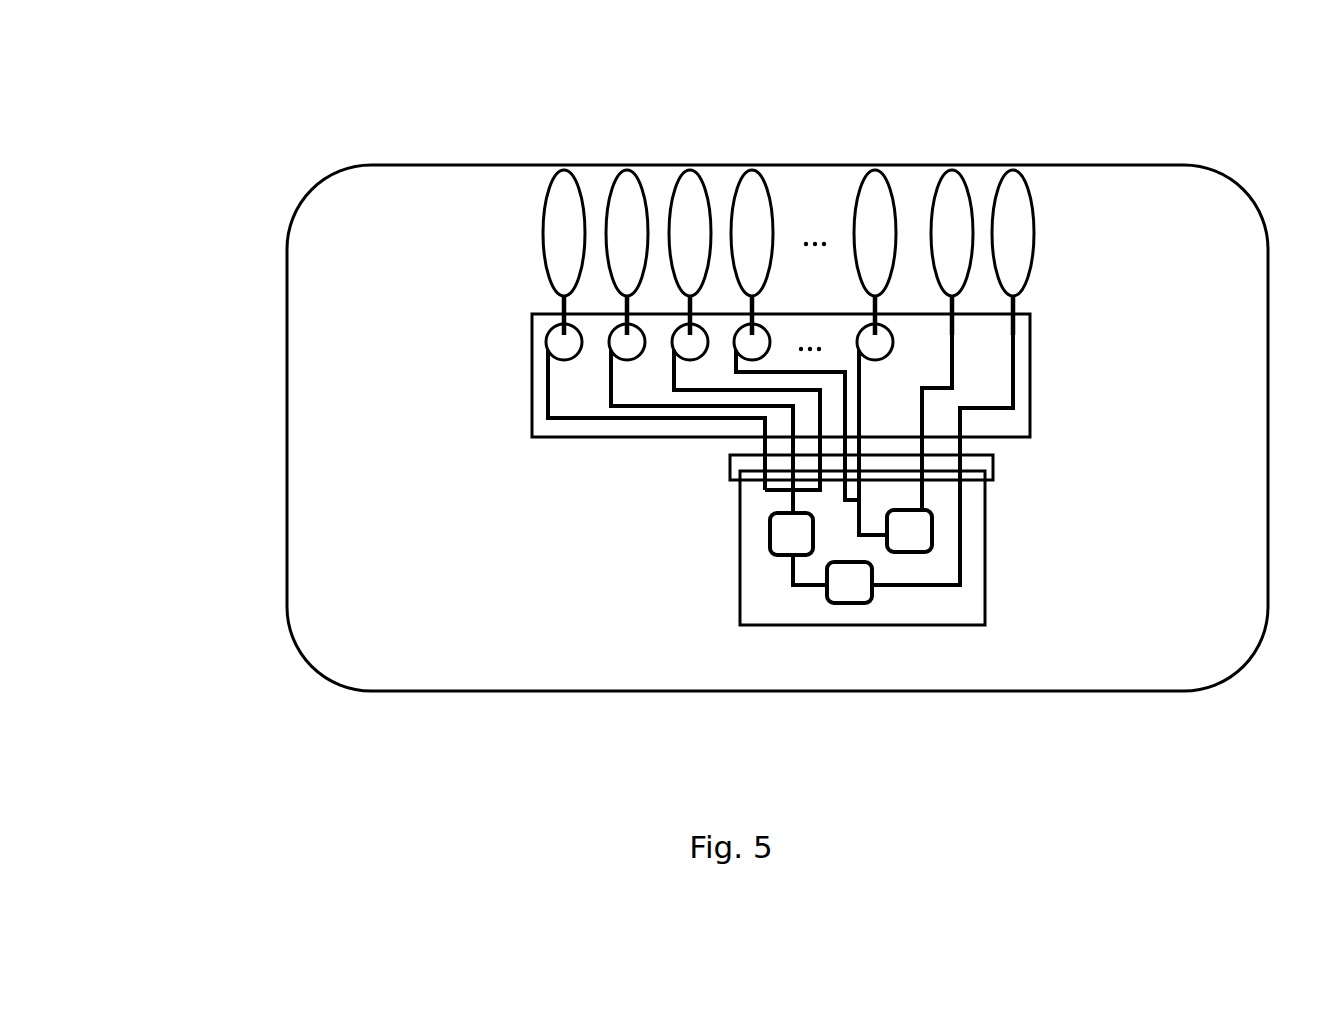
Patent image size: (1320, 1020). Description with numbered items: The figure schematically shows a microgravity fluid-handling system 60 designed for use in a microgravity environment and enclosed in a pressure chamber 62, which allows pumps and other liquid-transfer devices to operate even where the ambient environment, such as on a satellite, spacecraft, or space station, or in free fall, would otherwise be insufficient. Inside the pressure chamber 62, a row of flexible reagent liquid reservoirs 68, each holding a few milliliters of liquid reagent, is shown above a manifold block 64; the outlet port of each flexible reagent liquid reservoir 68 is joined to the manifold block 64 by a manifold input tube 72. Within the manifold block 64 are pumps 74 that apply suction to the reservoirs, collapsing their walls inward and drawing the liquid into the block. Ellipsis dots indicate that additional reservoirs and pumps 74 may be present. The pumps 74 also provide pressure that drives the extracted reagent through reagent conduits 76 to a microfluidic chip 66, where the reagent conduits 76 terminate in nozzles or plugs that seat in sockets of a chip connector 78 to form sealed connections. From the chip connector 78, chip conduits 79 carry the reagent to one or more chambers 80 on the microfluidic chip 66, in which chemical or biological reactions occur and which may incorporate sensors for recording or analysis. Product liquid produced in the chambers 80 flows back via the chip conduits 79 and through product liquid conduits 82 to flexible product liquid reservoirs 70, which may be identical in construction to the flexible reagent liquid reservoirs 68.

The microgravity fluid-handling system 60 is at (227, 85).
The pressure chamber 62 is at (385, 165).
The manifold block 64 is at (530, 395).
The microfluidic chip 66 is at (985, 577).
The flexible reagent liquid reservoir 68 is at (613, 183).
The flexible product liquid reservoir 70 is at (1028, 198).
The manifold input tube 72 is at (561, 305).
The pump 74 is at (547, 343).
The reagent conduit 76 is at (688, 392).
The chip connector 78 is at (995, 466).
The chip conduit 79 is at (787, 500).
The chamber 80 is at (832, 598).
The product liquid conduit 82 is at (1018, 380).